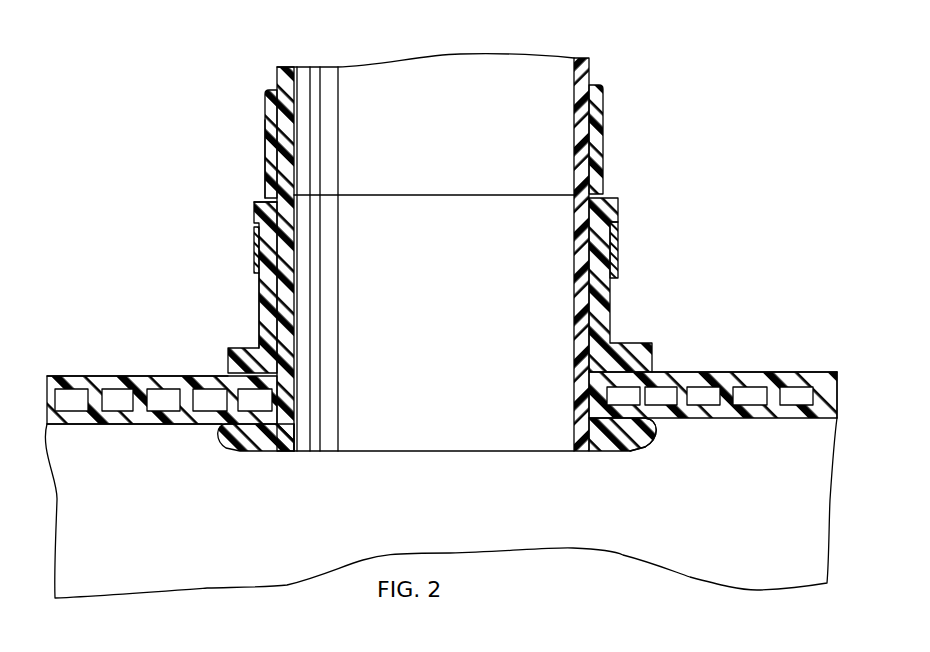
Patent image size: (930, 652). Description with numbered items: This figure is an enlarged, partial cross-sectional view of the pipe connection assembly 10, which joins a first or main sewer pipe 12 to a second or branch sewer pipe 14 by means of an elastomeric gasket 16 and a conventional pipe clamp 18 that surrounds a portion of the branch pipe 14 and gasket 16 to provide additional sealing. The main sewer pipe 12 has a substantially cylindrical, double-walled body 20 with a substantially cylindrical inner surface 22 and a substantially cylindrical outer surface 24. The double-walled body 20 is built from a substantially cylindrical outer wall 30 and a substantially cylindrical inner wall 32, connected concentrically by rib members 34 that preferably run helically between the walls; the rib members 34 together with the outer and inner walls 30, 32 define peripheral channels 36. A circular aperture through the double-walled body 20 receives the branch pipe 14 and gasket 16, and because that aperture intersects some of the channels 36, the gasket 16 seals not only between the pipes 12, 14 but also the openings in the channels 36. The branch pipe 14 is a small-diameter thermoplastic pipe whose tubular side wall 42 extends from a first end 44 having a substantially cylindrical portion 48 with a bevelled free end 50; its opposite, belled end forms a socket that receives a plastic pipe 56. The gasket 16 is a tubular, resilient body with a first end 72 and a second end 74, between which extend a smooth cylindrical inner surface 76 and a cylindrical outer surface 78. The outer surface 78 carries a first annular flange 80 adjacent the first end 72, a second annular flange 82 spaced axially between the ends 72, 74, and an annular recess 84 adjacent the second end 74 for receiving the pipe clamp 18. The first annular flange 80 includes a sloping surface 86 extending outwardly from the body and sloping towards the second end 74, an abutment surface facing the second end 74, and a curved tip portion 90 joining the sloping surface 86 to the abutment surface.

The pipe connection assembly 10 is at (163, 314).
The main sewer pipe 12 is at (88, 370).
The branch sewer pipe 14 is at (257, 123).
The elastomeric gasket 16 is at (253, 293).
The pipe clamp 18 is at (254, 243).
The double-walled body 20 is at (713, 371).
The inner surface 22 is at (828, 423).
The outer surface 24 is at (675, 372).
The outer wall 30 is at (125, 376).
The inner wall 32 is at (140, 426).
The rib member 34 is at (740, 396).
The peripheral channels 36 is at (118, 399).
The tubular side wall 42 is at (265, 160).
The first end 44 is at (297, 457).
The cylindrical portion 48 is at (604, 128).
The free end 50 is at (593, 452).
The plastic pipe 56 is at (277, 73).
The first end 72 is at (236, 460).
The second end 74 is at (250, 205).
The inner surface 76 is at (280, 305).
The outer surface 78 is at (256, 327).
The first annular flange 80 is at (652, 459).
The second annular flange 82 is at (632, 339).
The annular recess 84 is at (619, 222).
The sloping surface 86 is at (649, 448).
The curved tip portion 90 is at (658, 430).